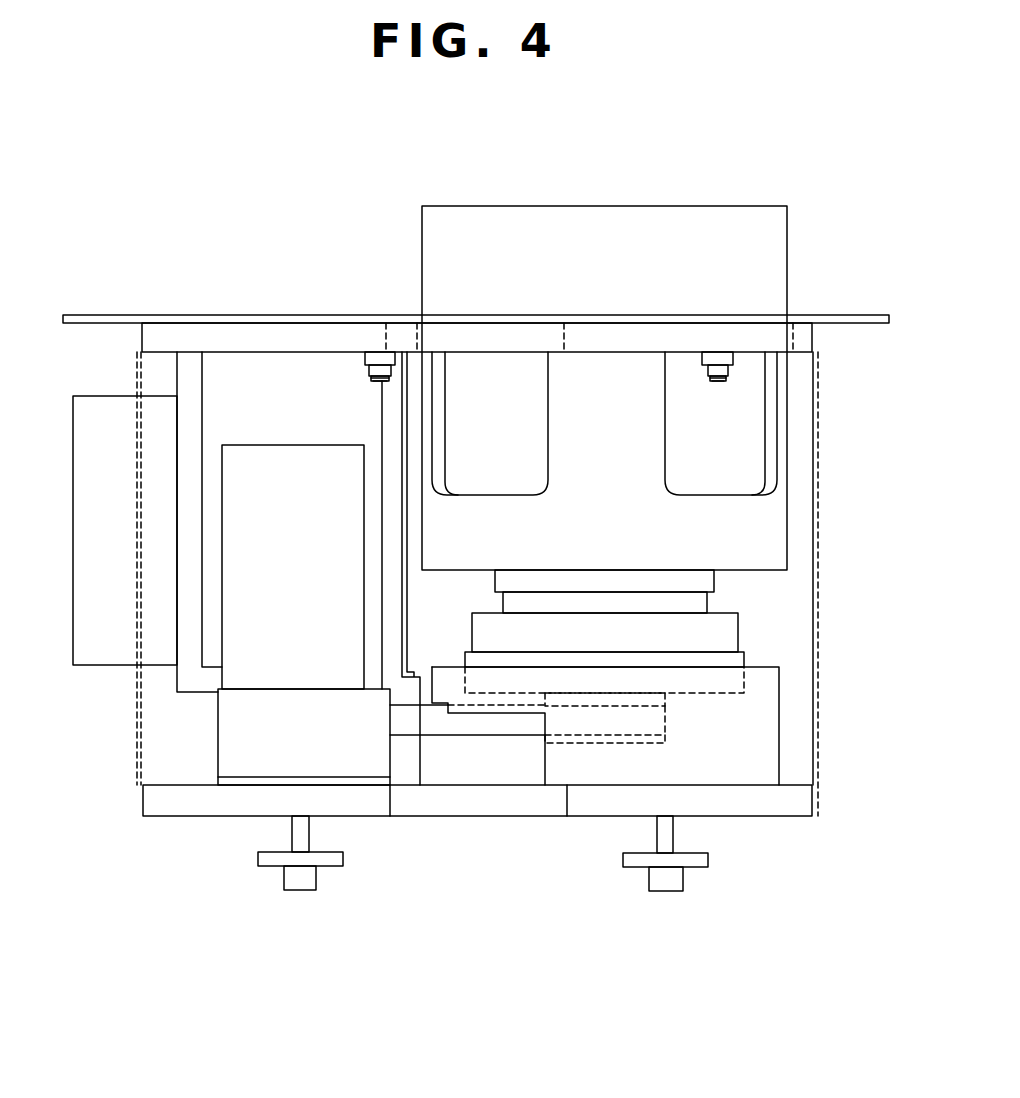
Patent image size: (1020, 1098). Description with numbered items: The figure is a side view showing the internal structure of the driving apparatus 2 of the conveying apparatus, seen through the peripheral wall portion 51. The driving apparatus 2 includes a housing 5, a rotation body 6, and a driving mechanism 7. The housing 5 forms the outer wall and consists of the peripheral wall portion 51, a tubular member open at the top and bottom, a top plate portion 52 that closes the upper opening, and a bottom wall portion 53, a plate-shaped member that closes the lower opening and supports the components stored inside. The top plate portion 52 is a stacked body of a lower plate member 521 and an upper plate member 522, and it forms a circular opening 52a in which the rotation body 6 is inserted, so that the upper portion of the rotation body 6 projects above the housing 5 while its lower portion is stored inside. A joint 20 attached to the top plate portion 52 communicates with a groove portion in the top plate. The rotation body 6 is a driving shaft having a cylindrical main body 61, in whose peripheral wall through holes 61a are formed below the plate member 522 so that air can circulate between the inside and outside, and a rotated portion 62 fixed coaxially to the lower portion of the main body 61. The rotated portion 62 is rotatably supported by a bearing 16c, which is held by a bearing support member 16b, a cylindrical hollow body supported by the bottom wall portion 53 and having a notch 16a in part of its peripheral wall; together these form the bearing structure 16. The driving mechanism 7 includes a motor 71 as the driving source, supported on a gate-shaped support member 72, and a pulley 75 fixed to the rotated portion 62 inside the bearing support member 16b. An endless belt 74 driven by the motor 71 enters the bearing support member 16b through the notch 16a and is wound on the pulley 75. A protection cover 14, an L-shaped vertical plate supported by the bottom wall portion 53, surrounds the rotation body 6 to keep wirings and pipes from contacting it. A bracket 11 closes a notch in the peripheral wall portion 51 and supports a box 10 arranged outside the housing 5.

The driving apparatus 2 is at (172, 205).
The housing 5 is at (152, 866).
The rotation body 6 is at (428, 183).
The driving mechanism 7 is at (442, 765).
The box 10 is at (95, 396).
The bracket 11 is at (177, 647).
The protection cover 14 is at (403, 365).
The holder 16 is at (788, 688).
The notch 16a is at (545, 762).
The bearing support member 16b is at (779, 733).
The bearing 16c is at (744, 660).
The joint 20 is at (365, 373).
The peripheral wall portion 51 is at (818, 598).
The top plate portion 52 is at (298, 294).
The opening 52a is at (417, 345).
The bottom wall portion 53 is at (737, 818).
The main body 61 is at (787, 240).
The through holes 61a is at (478, 372).
The rotated portion 62 is at (740, 630).
The motor 71 is at (293, 445).
The support member 72 is at (237, 770).
The belt 74 is at (472, 730).
The pulley 75 is at (670, 740).
The plate member 521 is at (632, 340).
The plate member 522 is at (232, 316).